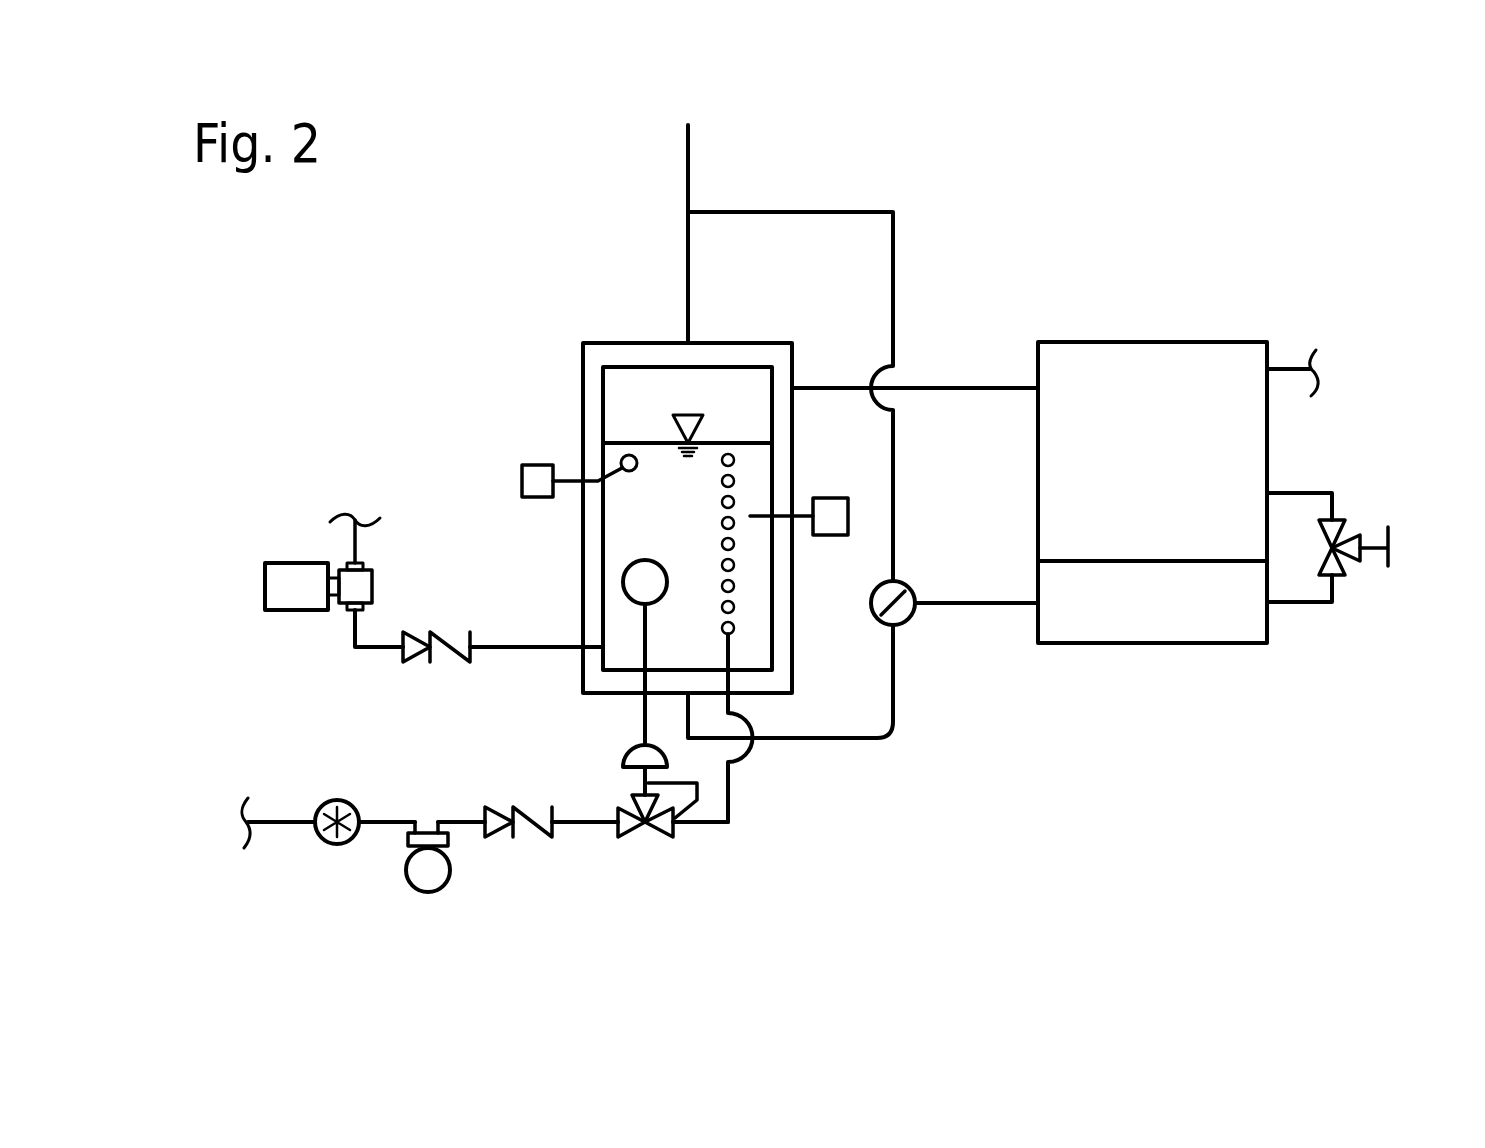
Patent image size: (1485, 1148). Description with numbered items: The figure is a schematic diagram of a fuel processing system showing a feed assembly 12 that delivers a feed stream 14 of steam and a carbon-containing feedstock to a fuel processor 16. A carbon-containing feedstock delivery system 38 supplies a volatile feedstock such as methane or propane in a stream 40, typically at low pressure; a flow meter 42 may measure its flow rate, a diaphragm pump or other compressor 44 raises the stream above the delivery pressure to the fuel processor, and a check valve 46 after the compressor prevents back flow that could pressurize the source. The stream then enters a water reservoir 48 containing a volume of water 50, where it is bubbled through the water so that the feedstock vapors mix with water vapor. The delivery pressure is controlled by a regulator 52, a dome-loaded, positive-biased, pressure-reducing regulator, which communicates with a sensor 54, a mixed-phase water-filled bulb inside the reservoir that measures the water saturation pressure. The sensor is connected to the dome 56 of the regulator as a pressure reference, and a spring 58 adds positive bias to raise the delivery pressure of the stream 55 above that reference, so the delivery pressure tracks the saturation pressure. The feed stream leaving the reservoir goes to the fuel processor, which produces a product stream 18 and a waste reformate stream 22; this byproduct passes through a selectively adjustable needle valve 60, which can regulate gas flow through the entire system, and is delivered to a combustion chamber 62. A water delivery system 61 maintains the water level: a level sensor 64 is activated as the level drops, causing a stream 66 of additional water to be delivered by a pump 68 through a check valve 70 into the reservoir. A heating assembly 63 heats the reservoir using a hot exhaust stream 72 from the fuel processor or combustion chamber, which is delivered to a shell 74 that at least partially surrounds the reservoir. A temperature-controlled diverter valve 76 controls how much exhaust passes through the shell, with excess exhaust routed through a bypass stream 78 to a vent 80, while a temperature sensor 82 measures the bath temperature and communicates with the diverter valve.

The feed assembly 12 is at (380, 283).
The feed stream 14 is at (968, 388).
The fuel processor 16 is at (1141, 336).
The product stream 18 is at (1285, 367).
The waste reformate stream 22 is at (1320, 493).
The carbon-containing feedstock delivery system 38 is at (453, 910).
The stream of carbon-containing feedstock 40 is at (268, 822).
The flow meter 42 is at (337, 845).
The compressor 44 is at (430, 833).
The check valve 46 is at (540, 840).
The water reservoir 48 is at (603, 403).
The water 50 is at (625, 503).
The regulator 52 is at (650, 832).
The sensor 54 is at (624, 585).
The stream 55 is at (647, 733).
The dome 56 is at (625, 760).
The spring 58 is at (620, 767).
The needle valve 60 is at (1392, 540).
The water delivery system 61 is at (338, 656).
The combustion chamber 62 is at (1148, 643).
The heating assembly 63 is at (1024, 686).
The sensor 64 is at (522, 478).
The stream of additional water 66 is at (350, 540).
The pump 68 is at (265, 580).
The check valve 70 is at (446, 640).
The hot exhaust stream 72 is at (987, 605).
The shell 74 is at (645, 343).
The diverter valve 76 is at (910, 590).
The bypass stream 78 is at (893, 487).
The vent 80 is at (688, 160).
The temperature sensor 82 is at (838, 498).